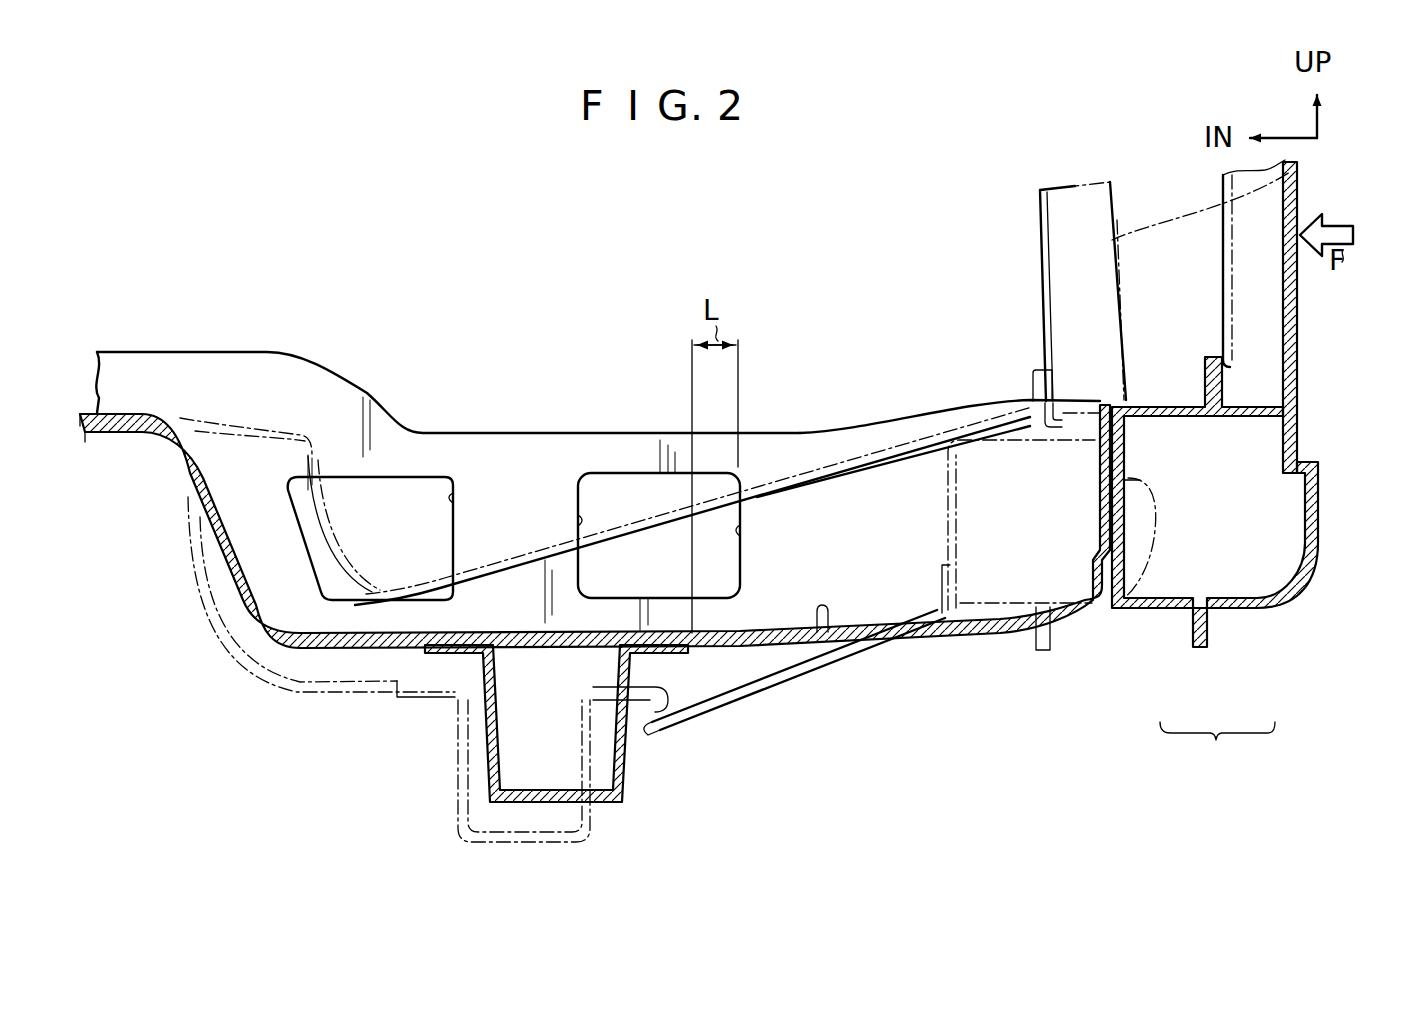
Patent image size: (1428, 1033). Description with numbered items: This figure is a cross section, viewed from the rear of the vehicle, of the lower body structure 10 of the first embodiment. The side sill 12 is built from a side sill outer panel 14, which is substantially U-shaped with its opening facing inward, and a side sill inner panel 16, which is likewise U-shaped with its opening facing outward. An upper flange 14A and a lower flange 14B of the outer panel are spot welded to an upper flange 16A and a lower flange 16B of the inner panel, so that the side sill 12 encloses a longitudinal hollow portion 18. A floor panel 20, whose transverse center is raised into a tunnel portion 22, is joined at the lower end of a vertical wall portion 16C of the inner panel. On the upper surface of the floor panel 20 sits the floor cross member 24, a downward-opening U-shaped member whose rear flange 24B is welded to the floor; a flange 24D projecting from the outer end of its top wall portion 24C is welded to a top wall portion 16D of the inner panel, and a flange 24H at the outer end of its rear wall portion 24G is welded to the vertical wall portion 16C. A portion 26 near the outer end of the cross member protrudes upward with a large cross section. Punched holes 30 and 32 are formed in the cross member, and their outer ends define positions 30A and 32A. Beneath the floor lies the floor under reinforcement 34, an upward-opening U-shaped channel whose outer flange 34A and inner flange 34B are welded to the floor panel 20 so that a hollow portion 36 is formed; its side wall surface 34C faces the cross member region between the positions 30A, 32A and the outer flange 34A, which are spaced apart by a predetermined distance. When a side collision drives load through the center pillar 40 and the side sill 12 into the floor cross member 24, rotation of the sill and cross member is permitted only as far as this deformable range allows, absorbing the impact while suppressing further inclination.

The vehicle body lower structure 10 is at (1380, 326).
The side sill 12 is at (885, 512).
The side sill outer panel 14 is at (1284, 603).
The upper flange 14A is at (1229, 352).
The lower flange 14B is at (1210, 626).
The side sill inner panel 16 is at (1150, 622).
The upper flange 16A is at (1213, 372).
The lower flange 16B is at (1196, 640).
The vertical wall portion 16C is at (1128, 512).
The top wall portion 16D is at (1178, 383).
The hollow portion 18 is at (1230, 525).
The floor panel 20 is at (734, 630).
The tunnel portion 22 is at (140, 413).
The floor cross member 24 is at (787, 470).
The rear flange 24B is at (822, 614).
The top wall portion 24C is at (566, 432).
The flange 24D is at (1122, 402).
The rear wall portion 24G is at (880, 632).
The flange 24H is at (1100, 460).
The portion 26 is at (947, 422).
The punched hole 30 is at (590, 522).
The position 30A is at (712, 528).
The punched hole 32 is at (452, 498).
The position 32A is at (740, 534).
The floor under reinforcement 34 is at (600, 822).
The outer flange 34A is at (660, 658).
The inner flange 34B is at (448, 652).
The side wall surface 34C is at (626, 760).
The hollow portion 36 is at (570, 745).
The center pillar 40 is at (1296, 192).